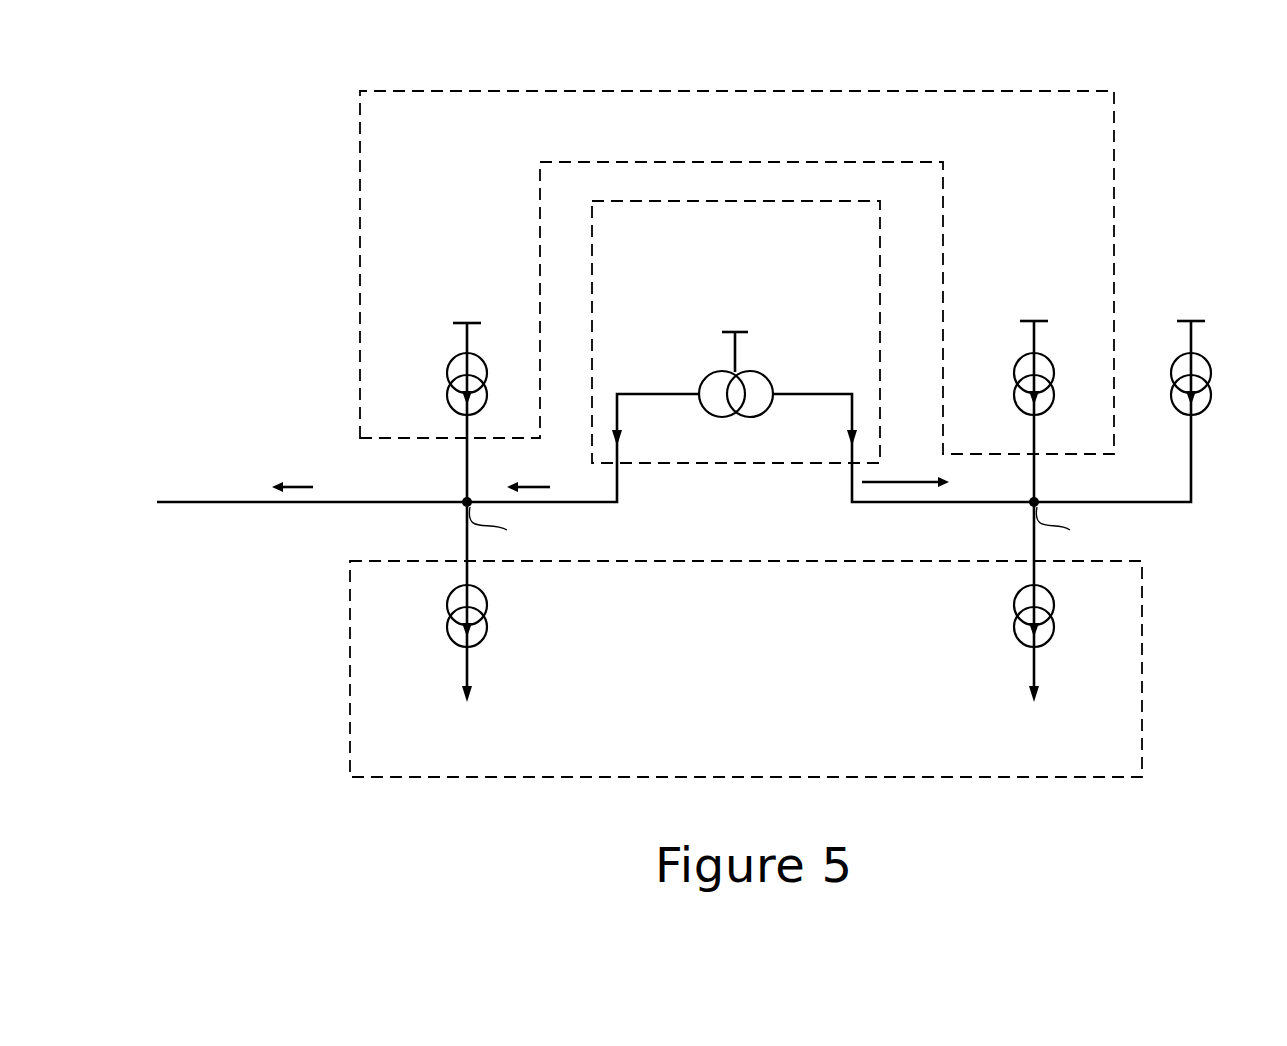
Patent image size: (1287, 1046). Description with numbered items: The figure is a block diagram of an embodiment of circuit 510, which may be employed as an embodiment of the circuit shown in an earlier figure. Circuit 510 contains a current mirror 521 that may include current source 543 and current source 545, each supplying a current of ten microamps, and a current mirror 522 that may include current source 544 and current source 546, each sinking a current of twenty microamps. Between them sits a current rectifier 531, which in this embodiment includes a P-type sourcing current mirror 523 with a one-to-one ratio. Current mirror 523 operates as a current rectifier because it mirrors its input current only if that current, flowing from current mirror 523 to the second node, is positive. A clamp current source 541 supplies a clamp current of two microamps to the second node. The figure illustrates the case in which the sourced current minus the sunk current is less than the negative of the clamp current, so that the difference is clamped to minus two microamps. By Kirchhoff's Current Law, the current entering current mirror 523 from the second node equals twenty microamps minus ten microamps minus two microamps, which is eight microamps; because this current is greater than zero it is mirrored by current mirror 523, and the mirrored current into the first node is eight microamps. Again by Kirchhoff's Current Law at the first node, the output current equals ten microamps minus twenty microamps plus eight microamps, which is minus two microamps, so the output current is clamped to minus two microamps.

The circuit 510 is at (738, 38).
The current mirror 521 is at (414, 130).
The current mirror 522 is at (404, 770).
The current rectifier 531 is at (646, 234).
The current mirror 523 is at (764, 375).
The current source 541 is at (1210, 366).
The current source 543 is at (449, 374).
The current source 544 is at (449, 608).
The current source 545 is at (1016, 366).
The current source 546 is at (1016, 607).